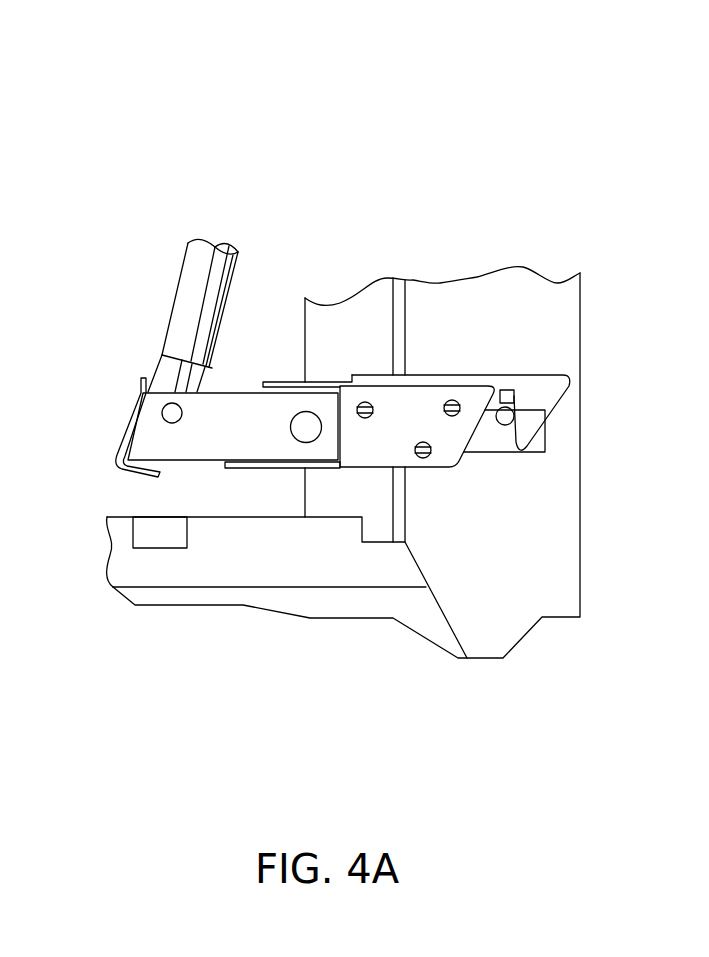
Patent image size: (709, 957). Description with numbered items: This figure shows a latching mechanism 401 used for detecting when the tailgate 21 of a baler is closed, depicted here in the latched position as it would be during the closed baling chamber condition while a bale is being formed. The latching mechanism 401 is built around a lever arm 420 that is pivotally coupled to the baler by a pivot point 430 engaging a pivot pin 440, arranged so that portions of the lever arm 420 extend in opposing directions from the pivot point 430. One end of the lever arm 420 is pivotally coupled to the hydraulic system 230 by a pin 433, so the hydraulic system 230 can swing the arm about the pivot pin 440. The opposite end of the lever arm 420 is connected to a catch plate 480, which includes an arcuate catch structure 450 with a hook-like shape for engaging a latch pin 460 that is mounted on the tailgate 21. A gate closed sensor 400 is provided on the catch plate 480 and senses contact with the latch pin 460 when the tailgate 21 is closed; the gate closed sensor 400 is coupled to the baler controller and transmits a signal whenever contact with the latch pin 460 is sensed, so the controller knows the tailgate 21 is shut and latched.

The latching mechanism 401 is at (406, 108).
The tailgate 21 is at (503, 620).
The hydraulic system 230 is at (190, 270).
The pivot point 430 is at (313, 412).
The pin 433 is at (163, 413).
The pivot pin 440 is at (303, 432).
The lever arm 420 is at (422, 397).
The gate closed sensor 400 is at (514, 394).
The catch plate 480 is at (503, 377).
The arcuate catch structure 450 is at (514, 410).
The latch pin 460 is at (507, 425).